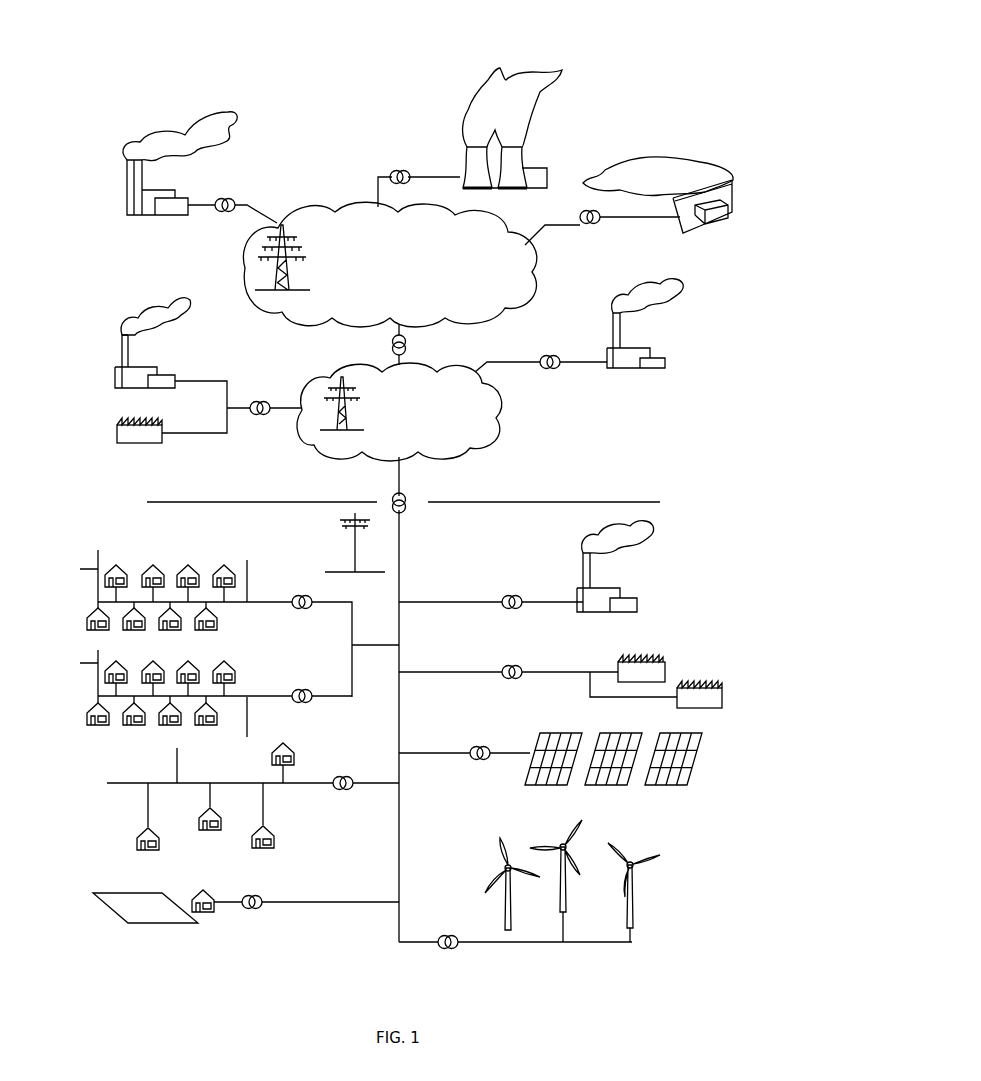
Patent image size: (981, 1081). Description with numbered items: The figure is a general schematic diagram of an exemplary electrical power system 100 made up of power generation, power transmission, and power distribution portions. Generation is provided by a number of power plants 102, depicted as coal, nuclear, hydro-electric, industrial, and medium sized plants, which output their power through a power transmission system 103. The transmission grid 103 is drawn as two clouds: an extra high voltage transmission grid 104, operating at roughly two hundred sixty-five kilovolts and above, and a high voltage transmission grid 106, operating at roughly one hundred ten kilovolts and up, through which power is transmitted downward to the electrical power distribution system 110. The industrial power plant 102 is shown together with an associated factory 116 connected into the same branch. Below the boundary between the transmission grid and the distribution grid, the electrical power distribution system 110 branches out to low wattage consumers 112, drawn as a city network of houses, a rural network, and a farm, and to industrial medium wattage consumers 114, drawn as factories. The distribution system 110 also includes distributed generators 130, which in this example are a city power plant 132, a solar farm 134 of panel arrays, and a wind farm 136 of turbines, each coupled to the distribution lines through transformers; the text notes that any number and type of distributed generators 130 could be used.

The electrical power system 100 is at (237, 48).
The power plant 102 is at (212, 104).
The power transmission system 103 is at (328, 366).
The extra high voltage transmission grid 104 is at (246, 256).
The high voltage transmission grid 106 is at (330, 450).
The electrical power distribution system 110 is at (399, 533).
The low wattage consumer 112 is at (132, 730).
The industrial medium wattage consumer 114 is at (655, 655).
The factory 116 is at (117, 428).
The distributed generator 130 is at (642, 590).
The city power plant 132 is at (648, 557).
The solar farm 134 is at (525, 775).
The wind farm 136 is at (500, 912).